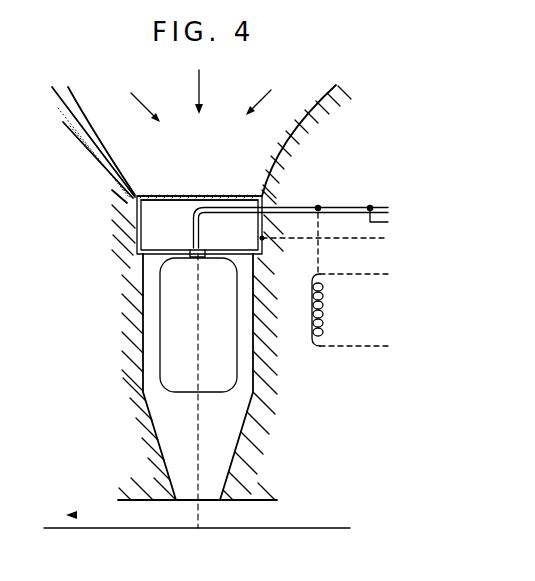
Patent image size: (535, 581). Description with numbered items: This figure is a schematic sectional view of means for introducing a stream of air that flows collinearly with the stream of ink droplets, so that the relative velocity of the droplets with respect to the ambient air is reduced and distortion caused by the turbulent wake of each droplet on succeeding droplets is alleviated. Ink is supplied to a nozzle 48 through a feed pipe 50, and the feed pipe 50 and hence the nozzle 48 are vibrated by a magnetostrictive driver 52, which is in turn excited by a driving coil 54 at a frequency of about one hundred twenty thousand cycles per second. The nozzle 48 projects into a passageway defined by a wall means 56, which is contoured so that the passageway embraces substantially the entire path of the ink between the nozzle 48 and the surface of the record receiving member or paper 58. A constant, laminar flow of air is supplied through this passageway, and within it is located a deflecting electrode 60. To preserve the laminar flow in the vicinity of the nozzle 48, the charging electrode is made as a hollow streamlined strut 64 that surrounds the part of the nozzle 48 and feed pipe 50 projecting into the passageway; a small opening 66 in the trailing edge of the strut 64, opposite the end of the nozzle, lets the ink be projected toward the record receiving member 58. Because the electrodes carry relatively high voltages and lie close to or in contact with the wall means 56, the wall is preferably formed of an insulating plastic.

The nozzle 48 is at (194, 232).
The feed pipe 50 is at (348, 206).
The magnetostrictive driver 52 is at (322, 256).
The driving coil 54 is at (322, 306).
The wall means 56 is at (94, 148).
The record receiving member 58 is at (169, 530).
The deflecting electrode 60 is at (136, 322).
The hollow streamlined strut 64 is at (197, 194).
The small opening 66 is at (204, 251).